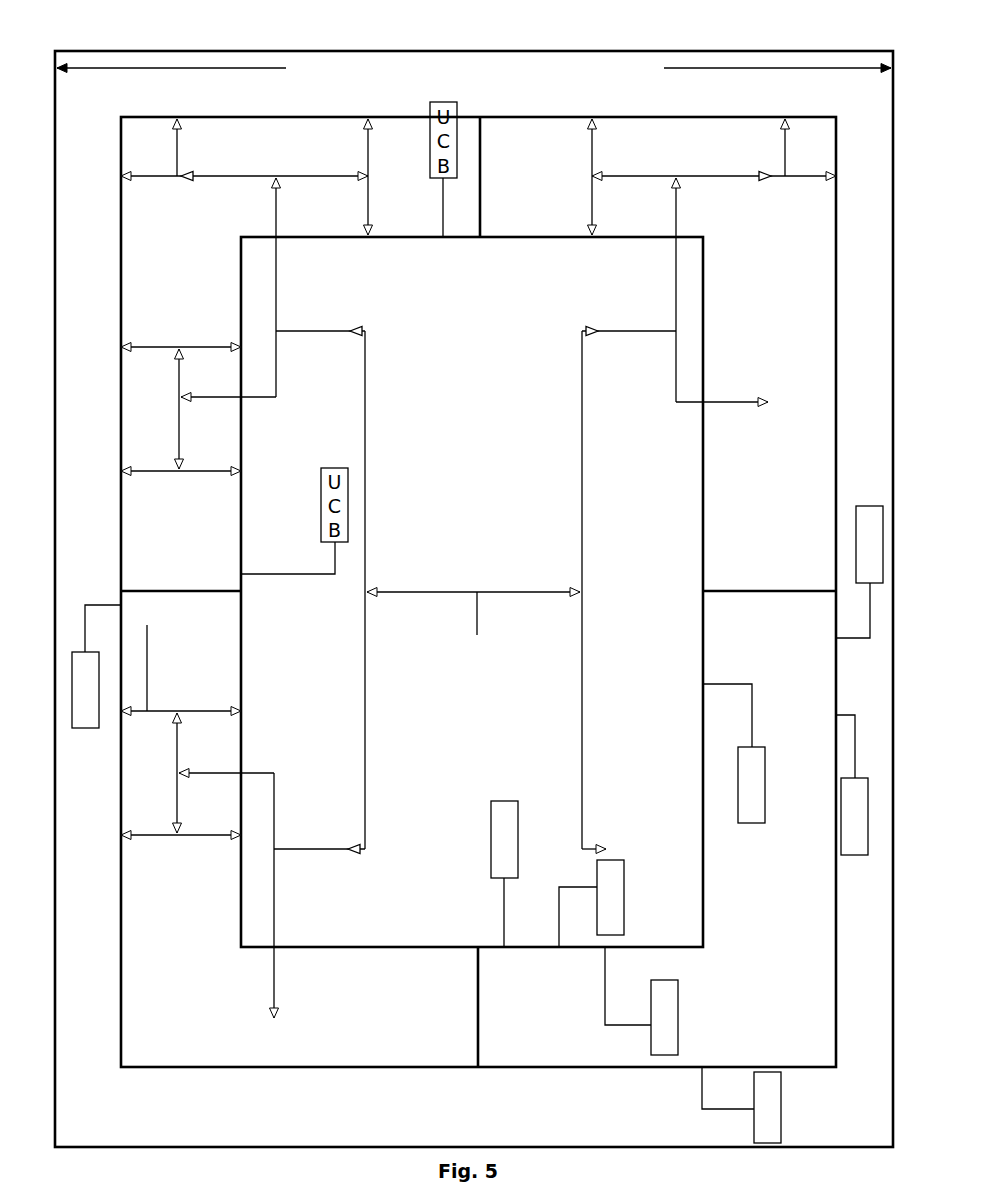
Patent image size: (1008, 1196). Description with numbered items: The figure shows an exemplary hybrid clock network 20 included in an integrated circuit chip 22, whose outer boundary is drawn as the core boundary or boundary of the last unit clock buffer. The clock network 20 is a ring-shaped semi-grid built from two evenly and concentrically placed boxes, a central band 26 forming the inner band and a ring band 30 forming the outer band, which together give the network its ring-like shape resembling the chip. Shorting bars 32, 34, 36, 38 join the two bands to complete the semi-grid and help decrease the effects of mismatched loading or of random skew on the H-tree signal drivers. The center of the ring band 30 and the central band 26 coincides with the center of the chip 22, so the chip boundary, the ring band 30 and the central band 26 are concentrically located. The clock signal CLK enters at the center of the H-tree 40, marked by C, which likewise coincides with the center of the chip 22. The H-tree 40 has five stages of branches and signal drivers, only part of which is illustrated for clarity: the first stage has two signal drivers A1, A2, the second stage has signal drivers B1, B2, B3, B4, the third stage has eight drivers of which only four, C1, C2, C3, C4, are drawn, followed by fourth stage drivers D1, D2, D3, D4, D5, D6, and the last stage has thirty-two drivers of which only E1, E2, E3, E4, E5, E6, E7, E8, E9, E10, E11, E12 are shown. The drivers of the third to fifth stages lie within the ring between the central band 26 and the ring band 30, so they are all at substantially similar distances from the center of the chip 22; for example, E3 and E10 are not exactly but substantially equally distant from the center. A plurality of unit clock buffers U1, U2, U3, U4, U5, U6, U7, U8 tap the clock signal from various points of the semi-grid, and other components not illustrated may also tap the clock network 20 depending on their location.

The hybrid clock network 20 is at (137, 92).
The integrated circuit chip 22 is at (735, 52).
The central band 26 is at (540, 238).
The ring band 30 is at (283, 1065).
The shorting bar 32 is at (745, 593).
The shorting bar 34 is at (480, 1026).
The shorting bar 36 is at (175, 590).
The shorting bar 38 is at (481, 158).
The H-tree 40 is at (147, 618).
The clock signal CLK is at (477, 630).
The center of the H-tree C is at (476, 588).
The first stage signal driver A1 is at (375, 580).
The first stage signal driver A2 is at (572, 580).
The second stage signal driver B1 is at (368, 780).
The second stage signal driver B2 is at (368, 330).
The second stage signal driver B3 is at (590, 342).
The second stage signal driver B4 is at (598, 840).
The third stage signal driver C1 is at (186, 768).
The third stage signal driver C2 is at (192, 402).
The third stage signal driver C3 is at (278, 230).
The third stage signal driver C4 is at (680, 192).
The fourth stage signal driver D1 is at (173, 718).
The fourth stage signal driver D2 is at (172, 460).
The fourth stage signal driver D3 is at (185, 358).
The fourth stage signal driver D4 is at (192, 182).
The fourth stage signal driver D5 is at (595, 180).
The fourth stage signal driver D6 is at (775, 182).
The last stage signal driver E1 is at (237, 700).
The last stage signal driver E2 is at (128, 843).
The last stage signal driver E3 is at (234, 480).
The last stage signal driver E4 is at (128, 478).
The last stage signal driver E5 is at (127, 342).
The last stage signal driver E6 is at (126, 182).
The last stage signal driver E7 is at (182, 123).
The last stage signal driver E8 is at (362, 125).
The last stage signal driver E9 is at (372, 235).
The last stage signal driver E10 is at (597, 230).
The last stage signal driver E11 is at (586, 124).
The last stage signal driver E12 is at (830, 182).
The unit clock buffer U1 is at (520, 825).
The unit clock buffer U2 is at (626, 880).
The unit clock buffer U3 is at (679, 1017).
The unit clock buffer U4 is at (766, 787).
The unit clock buffer U5 is at (782, 1130).
The unit clock buffer U6 is at (856, 856).
The unit clock buffer U7 is at (870, 505).
The unit clock buffer U8 is at (85, 730).